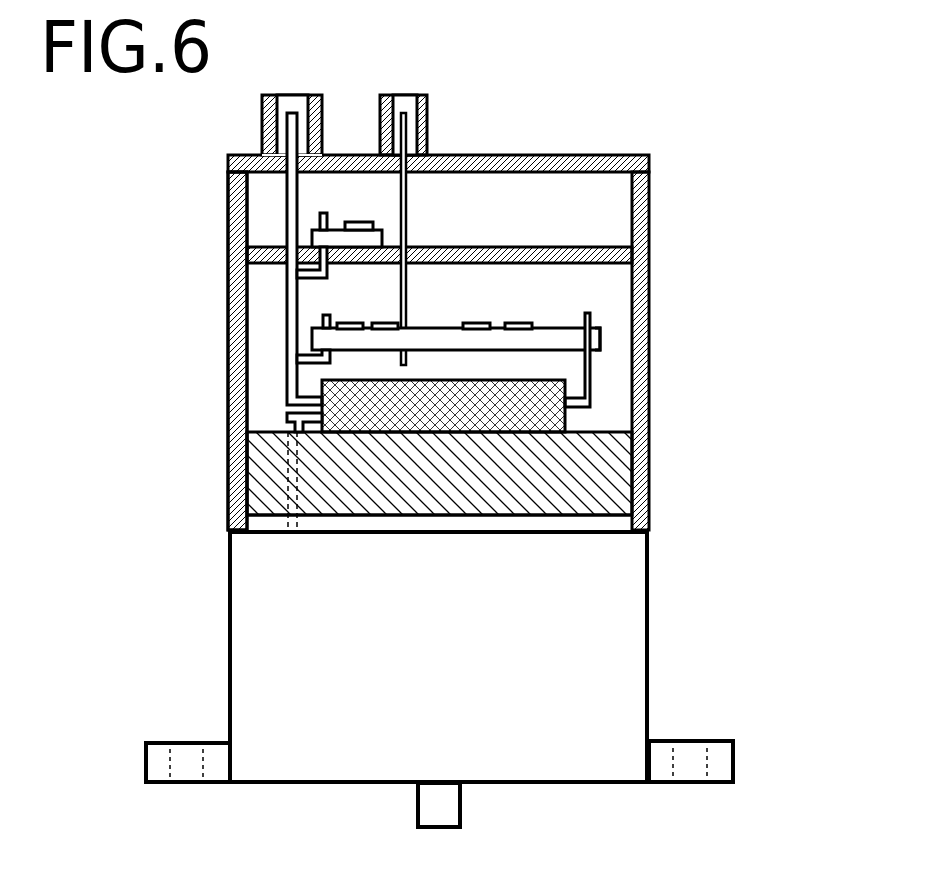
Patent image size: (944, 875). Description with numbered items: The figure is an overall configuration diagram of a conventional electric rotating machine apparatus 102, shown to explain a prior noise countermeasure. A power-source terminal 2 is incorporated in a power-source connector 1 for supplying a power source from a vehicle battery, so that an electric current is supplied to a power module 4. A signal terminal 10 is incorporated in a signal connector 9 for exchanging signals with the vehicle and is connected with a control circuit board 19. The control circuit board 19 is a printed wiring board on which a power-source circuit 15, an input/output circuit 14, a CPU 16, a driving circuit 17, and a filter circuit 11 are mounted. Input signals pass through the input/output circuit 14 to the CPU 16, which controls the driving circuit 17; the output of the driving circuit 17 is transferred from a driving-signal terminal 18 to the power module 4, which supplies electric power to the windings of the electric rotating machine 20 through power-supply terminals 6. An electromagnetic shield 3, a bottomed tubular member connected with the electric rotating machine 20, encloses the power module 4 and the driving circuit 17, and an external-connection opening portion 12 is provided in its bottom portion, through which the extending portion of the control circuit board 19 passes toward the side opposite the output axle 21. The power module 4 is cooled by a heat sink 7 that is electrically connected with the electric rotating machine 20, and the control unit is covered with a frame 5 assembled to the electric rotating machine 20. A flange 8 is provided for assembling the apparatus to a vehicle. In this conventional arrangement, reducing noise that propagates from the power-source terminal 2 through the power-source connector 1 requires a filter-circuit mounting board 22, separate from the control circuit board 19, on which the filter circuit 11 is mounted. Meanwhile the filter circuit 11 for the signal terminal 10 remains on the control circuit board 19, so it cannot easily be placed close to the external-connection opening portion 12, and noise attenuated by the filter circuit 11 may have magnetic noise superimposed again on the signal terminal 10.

The power-source connector 1 is at (262, 132).
The power-source terminal 2 is at (287, 198).
The electromagnetic shield 3 is at (247, 247).
The power module 4 is at (320, 381).
The frame 5 is at (228, 337).
The power-supply terminals 6 is at (287, 413).
The heat sink 7 is at (273, 500).
The flange 8 is at (165, 742).
The signal connector 9 is at (427, 114).
The signal terminal 10 is at (407, 283).
The filter circuit 11 is at (355, 223).
The external-connection opening portion 12 is at (282, 248).
The input/output circuit 14 is at (337, 320).
The power-source circuit 15 is at (455, 322).
The CPU 16 is at (530, 323).
The driving circuit 17 is at (600, 332).
The driving-signal terminal 18 is at (593, 407).
The control circuit board 19 is at (565, 340).
The electric rotating machine 20 is at (627, 617).
The output axle 21 is at (437, 808).
The filter-circuit mounting board 22 is at (318, 218).
The electric rotating machine apparatus 102 is at (727, 492).